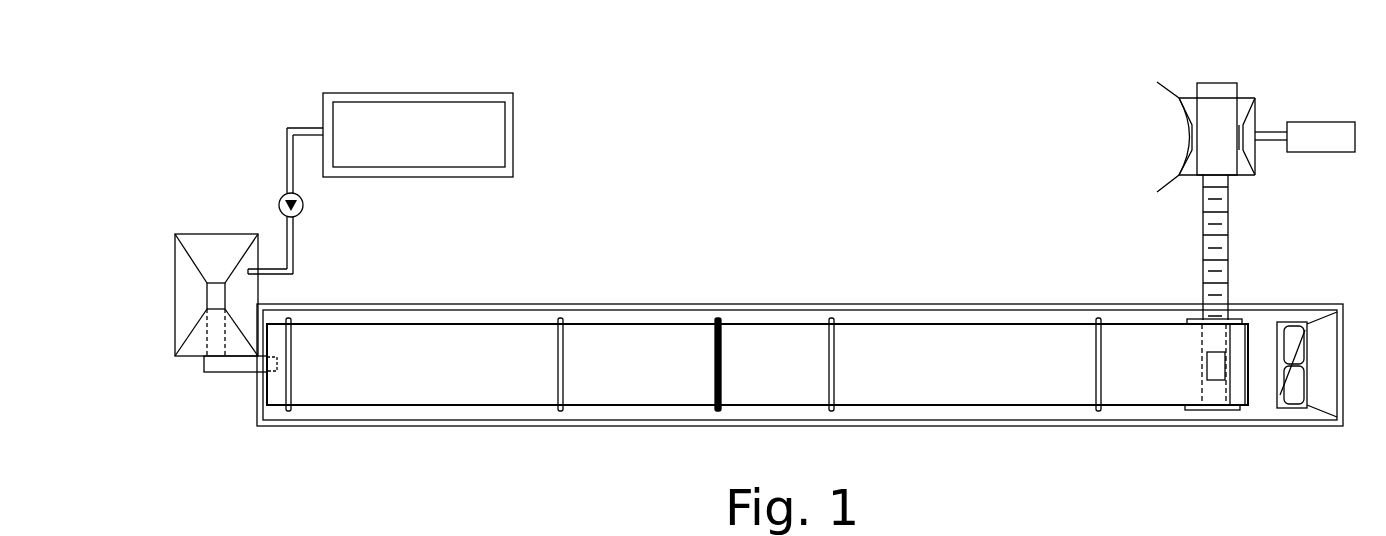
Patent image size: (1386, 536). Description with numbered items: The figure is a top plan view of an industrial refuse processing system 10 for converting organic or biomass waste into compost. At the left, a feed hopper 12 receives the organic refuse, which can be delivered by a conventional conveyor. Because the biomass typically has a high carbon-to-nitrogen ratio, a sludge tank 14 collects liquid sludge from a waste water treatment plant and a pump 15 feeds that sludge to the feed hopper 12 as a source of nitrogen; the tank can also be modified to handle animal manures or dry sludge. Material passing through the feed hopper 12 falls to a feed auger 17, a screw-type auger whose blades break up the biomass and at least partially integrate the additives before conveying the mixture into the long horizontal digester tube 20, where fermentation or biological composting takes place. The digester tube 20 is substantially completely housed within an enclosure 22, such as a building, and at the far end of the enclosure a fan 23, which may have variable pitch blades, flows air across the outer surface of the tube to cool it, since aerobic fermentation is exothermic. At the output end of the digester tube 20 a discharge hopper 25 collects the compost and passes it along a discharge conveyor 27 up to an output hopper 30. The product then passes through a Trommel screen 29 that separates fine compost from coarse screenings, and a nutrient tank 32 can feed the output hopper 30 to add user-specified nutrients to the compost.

The refuse processing system 10 is at (784, 275).
The feed hopper 12 is at (178, 297).
The sludge tank 14 is at (445, 96).
The pump 15 is at (278, 210).
The feed auger 17 is at (230, 368).
The digester tube 20 is at (462, 393).
The enclosure 22 is at (845, 425).
The fan 23 is at (1293, 400).
The discharge hopper 25 is at (1192, 320).
The discharge conveyor 27 is at (1218, 238).
The Trommel screen 29 is at (1220, 110).
The output hopper 30 is at (1192, 108).
The nutrient tank 32 is at (1320, 125).